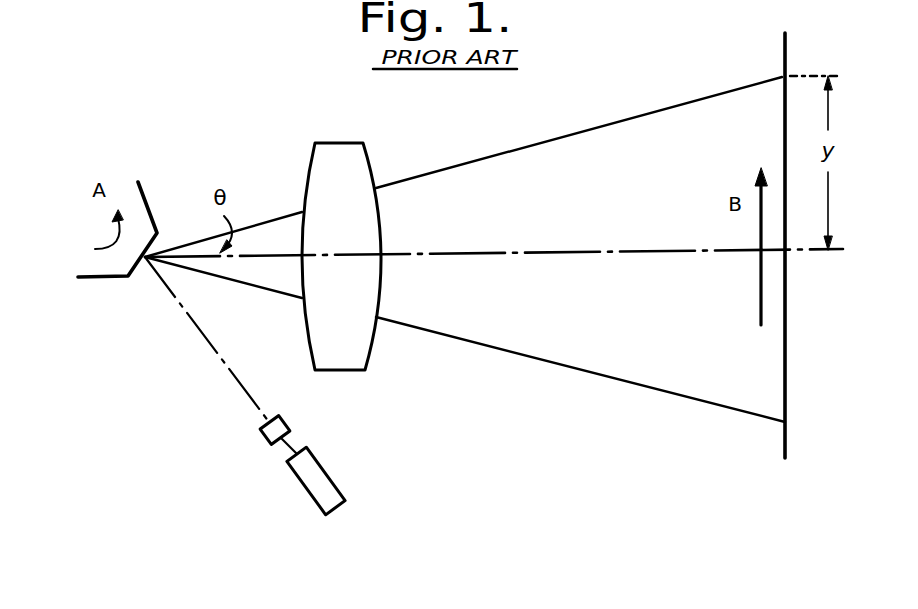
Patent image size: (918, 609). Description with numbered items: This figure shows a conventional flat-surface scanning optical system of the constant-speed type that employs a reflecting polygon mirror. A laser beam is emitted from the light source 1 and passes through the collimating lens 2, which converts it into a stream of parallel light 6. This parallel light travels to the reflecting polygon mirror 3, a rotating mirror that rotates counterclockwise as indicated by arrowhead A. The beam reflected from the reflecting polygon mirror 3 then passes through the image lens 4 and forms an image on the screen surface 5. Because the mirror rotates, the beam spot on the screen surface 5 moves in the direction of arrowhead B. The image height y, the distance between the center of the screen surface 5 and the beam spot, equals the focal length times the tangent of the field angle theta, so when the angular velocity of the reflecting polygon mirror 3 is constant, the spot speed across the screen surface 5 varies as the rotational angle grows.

The light source 1 is at (337, 486).
The collimating lens 2 is at (262, 432).
The reflecting polygon mirror 3 is at (103, 267).
The image lens 4 is at (358, 158).
The screen surface 5 is at (789, 355).
The stream of parallel light 6 is at (215, 352).